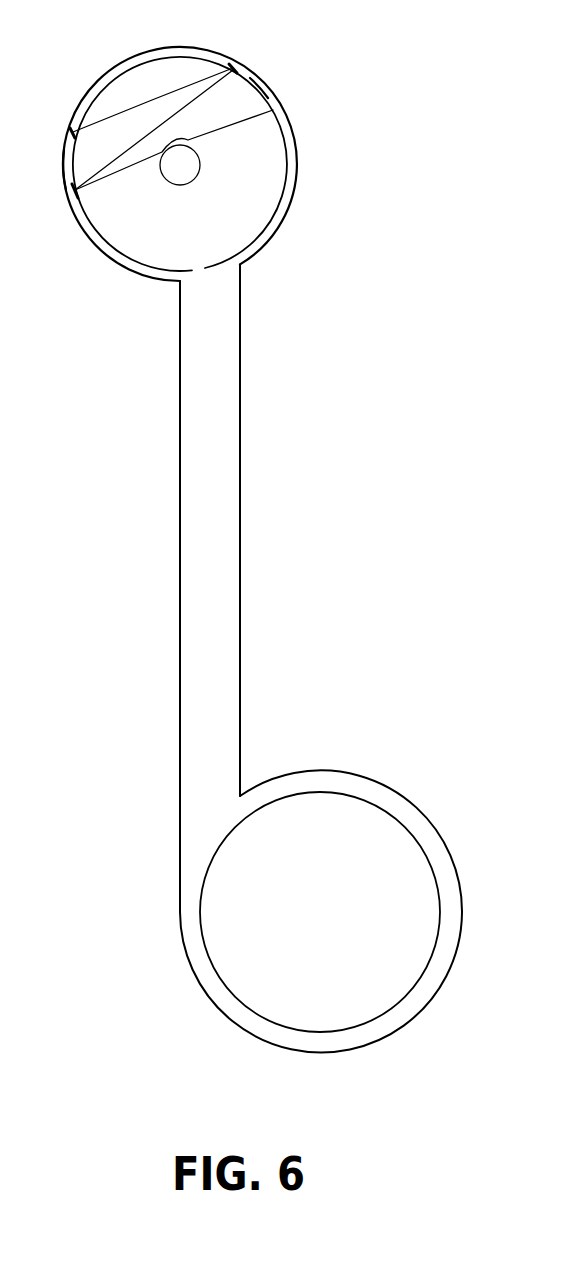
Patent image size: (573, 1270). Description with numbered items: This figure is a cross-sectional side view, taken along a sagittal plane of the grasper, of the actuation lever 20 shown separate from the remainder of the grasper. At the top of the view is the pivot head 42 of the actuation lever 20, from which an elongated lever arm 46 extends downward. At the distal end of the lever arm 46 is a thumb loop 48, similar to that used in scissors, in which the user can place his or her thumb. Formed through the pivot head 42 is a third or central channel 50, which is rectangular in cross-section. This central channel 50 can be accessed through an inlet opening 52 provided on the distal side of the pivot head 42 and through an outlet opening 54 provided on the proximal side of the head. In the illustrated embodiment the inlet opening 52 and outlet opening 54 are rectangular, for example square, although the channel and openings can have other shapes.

The actuation lever 20 is at (237, 531).
The pivot head 42 is at (118, 72).
The elongated lever arm 46 is at (178, 612).
The thumb loop 48 is at (186, 958).
The central channel 50 is at (253, 99).
The inlet opening 52 is at (56, 175).
The outlet opening 54 is at (263, 69).